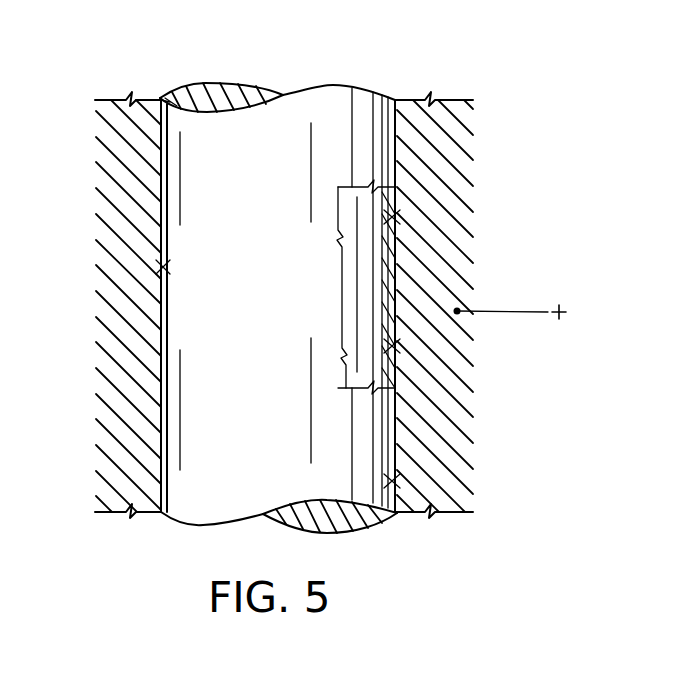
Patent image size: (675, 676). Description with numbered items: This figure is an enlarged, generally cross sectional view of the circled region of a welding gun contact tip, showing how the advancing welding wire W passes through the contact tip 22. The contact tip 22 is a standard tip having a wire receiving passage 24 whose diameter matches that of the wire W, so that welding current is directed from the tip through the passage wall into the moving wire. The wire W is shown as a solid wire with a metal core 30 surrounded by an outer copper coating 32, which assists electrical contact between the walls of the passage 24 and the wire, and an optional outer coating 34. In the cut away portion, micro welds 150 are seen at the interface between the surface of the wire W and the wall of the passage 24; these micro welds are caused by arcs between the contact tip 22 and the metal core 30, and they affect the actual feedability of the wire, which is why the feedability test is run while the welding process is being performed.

The contact tip 22 is at (447, 107).
The wire receiving passage 24 is at (388, 142).
The metal core 30 is at (240, 97).
The outer copper coating 32 is at (178, 95).
The outer coating 34 is at (167, 97).
The wire W is at (344, 89).
The micro welds 150 is at (164, 267).